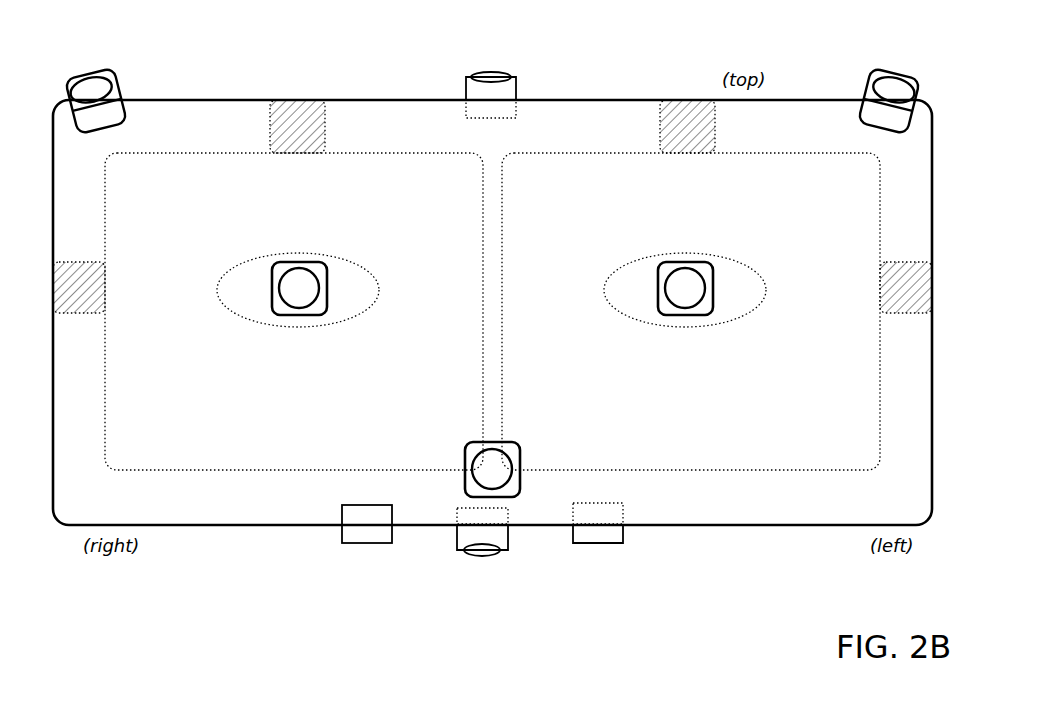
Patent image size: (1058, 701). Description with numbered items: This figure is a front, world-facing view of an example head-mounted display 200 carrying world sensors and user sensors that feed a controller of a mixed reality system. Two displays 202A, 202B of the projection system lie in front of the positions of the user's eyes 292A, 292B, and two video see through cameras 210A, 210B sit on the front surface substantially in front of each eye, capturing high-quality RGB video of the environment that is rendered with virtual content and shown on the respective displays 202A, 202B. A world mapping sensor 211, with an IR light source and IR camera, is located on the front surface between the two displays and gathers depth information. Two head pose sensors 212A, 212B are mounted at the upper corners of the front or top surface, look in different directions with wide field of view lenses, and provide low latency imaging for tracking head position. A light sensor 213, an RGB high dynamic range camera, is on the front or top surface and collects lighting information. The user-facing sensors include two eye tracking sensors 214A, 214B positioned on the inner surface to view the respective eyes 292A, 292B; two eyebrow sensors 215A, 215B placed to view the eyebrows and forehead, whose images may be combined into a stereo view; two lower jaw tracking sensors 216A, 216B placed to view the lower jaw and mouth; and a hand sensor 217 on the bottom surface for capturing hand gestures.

The head-mounted display 200 is at (195, 525).
The display 202A is at (288, 470).
The display 202B is at (690, 470).
The video see through camera 210A is at (298, 262).
The video see through camera 210B is at (686, 262).
The world mapping sensor 211 is at (506, 442).
The head pose sensor 212A is at (87, 70).
The head pose sensor 212B is at (898, 70).
The light sensor 213 is at (518, 92).
The eye tracking sensor 214A is at (78, 313).
The eye tracking sensor 214B is at (905, 315).
The eyebrow sensor 215A is at (325, 147).
The eyebrow sensor 215B is at (660, 147).
The lower jaw tracking sensor 216A is at (365, 543).
The lower jaw tracking sensor 216B is at (600, 545).
The hand sensor 217 is at (482, 556).
The eye 292A is at (362, 265).
The eye 292B is at (622, 265).